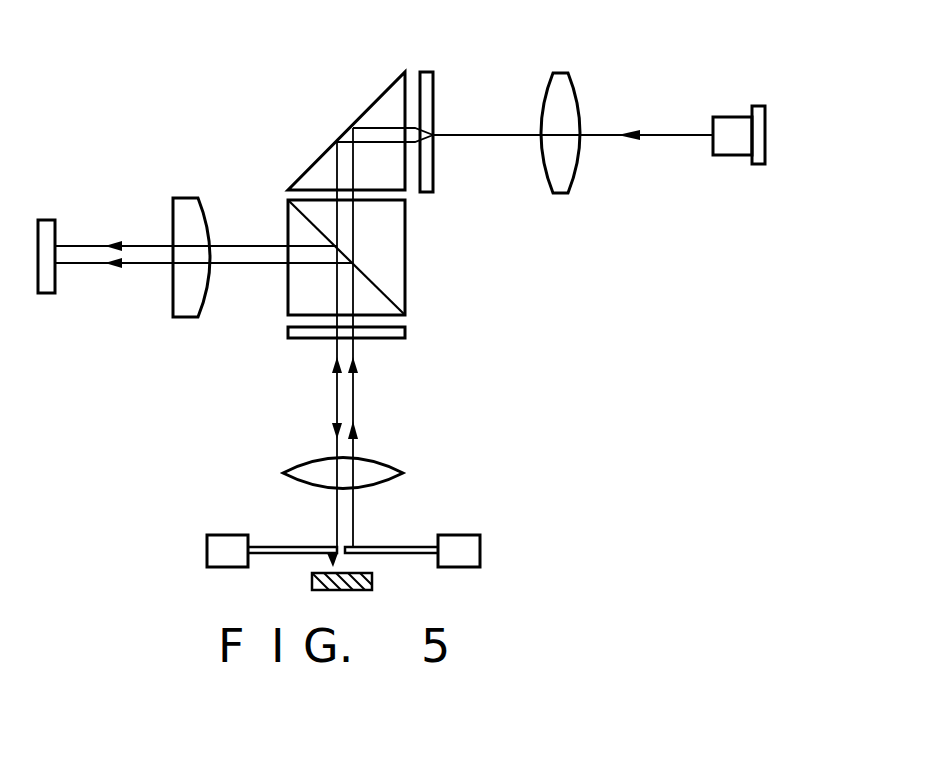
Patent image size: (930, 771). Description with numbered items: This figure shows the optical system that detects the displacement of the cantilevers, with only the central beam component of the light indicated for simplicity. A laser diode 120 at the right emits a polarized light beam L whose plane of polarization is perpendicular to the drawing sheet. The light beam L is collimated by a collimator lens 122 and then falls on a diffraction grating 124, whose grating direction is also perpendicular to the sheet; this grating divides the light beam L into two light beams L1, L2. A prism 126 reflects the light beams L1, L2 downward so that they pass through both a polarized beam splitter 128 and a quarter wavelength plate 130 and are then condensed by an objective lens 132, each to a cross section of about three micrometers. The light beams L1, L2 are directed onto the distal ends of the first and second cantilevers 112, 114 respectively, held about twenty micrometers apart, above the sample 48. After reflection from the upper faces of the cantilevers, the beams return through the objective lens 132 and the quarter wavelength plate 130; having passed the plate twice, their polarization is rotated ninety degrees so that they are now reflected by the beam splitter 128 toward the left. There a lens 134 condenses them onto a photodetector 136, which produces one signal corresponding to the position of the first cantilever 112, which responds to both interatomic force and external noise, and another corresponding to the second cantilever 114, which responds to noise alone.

The sample 48 is at (372, 580).
The first cantilever 112 is at (280, 540).
The second cantilever 114 is at (415, 540).
The laser diode 120 is at (735, 117).
The collimator lens 122 is at (560, 73).
The diffraction grating 124 is at (430, 72).
The prism 126 is at (312, 168).
The polarized beam splitter 128 is at (405, 270).
The 1/4 wavelength plate 130 is at (405, 330).
The objective lens 132 is at (395, 465).
The lens 134 is at (195, 198).
The photodetector 136 is at (45, 218).
The light beam L is at (667, 137).
The light beam L1 is at (385, 143).
The light beam L2 is at (378, 125).